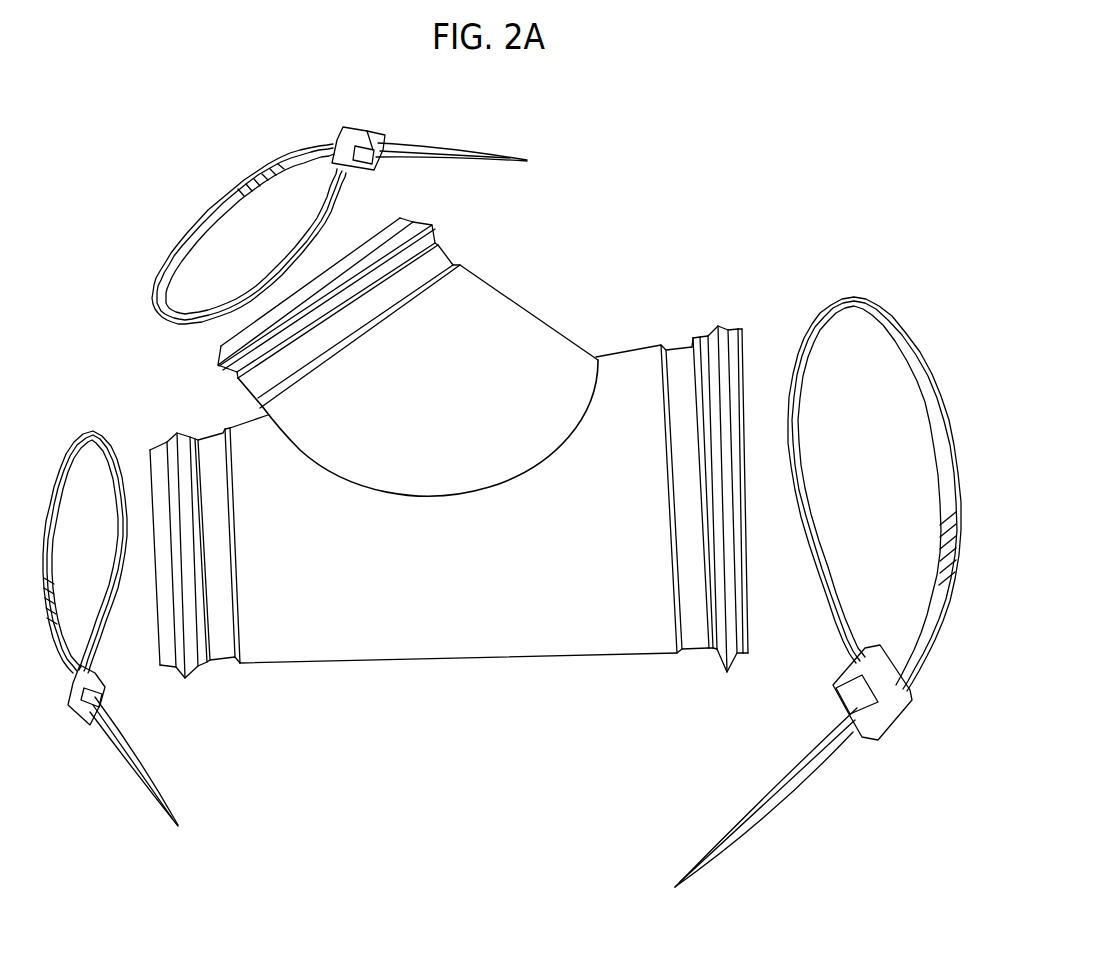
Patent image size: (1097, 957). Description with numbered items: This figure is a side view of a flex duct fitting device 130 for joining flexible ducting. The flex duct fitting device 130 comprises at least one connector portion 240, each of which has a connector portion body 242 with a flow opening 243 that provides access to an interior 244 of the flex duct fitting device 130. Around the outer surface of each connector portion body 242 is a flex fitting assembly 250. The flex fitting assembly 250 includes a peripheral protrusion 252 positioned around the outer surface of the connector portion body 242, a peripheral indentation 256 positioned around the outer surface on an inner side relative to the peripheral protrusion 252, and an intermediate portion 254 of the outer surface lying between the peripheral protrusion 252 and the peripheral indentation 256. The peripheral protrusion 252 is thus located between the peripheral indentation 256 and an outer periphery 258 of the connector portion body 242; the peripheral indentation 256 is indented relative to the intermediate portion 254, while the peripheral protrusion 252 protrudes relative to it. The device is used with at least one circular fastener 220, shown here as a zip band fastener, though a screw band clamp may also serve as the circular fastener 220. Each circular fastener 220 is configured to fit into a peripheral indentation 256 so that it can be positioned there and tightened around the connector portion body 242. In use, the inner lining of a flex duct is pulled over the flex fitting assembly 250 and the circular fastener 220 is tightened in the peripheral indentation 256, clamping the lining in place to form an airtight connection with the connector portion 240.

The flex duct fitting device 130 is at (137, 157).
The circular fastener 220 is at (462, 137).
The connector portion 240 is at (456, 228).
The connector portion body 242 is at (644, 340).
The flow opening 243 is at (750, 586).
The interior 244 is at (510, 591).
The flex fitting assembly 250 is at (695, 686).
The peripheral protrusion 252 is at (717, 324).
The intermediate portion 254 is at (700, 333).
The peripheral indentation 256 is at (681, 336).
The outer periphery 258 is at (740, 329).